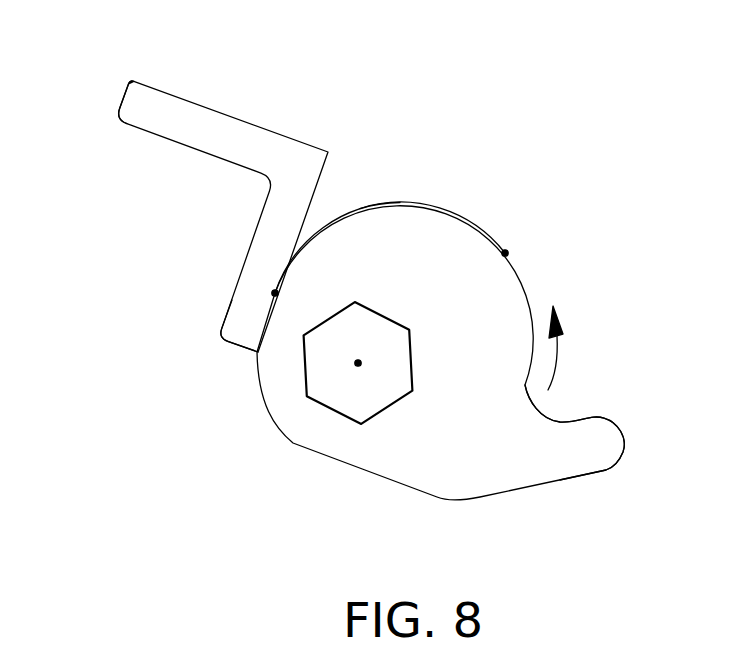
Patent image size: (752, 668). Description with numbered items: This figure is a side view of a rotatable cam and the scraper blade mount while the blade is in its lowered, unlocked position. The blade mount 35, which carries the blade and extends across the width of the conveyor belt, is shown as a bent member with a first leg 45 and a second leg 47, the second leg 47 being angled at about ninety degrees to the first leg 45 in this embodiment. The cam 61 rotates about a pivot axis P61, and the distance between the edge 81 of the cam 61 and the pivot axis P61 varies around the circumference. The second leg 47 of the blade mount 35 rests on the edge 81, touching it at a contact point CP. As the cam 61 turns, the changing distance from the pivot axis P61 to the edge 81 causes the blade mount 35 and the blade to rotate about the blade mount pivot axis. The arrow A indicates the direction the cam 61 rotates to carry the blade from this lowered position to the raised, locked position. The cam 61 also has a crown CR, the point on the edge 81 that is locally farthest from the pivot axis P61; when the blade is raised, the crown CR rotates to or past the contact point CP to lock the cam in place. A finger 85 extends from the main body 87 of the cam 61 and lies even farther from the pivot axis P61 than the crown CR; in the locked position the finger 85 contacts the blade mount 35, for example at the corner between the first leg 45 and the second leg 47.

The blade mount 35 is at (147, 128).
The first leg 45 is at (208, 125).
The second leg 47 is at (243, 303).
The cam 61 is at (448, 237).
The edge 81 is at (408, 203).
The finger 85 is at (587, 448).
The main body 87 is at (380, 240).
The contact point CP is at (275, 293).
The crown CR is at (505, 253).
The arrow A is at (558, 353).
The pivot axis P61 is at (358, 363).